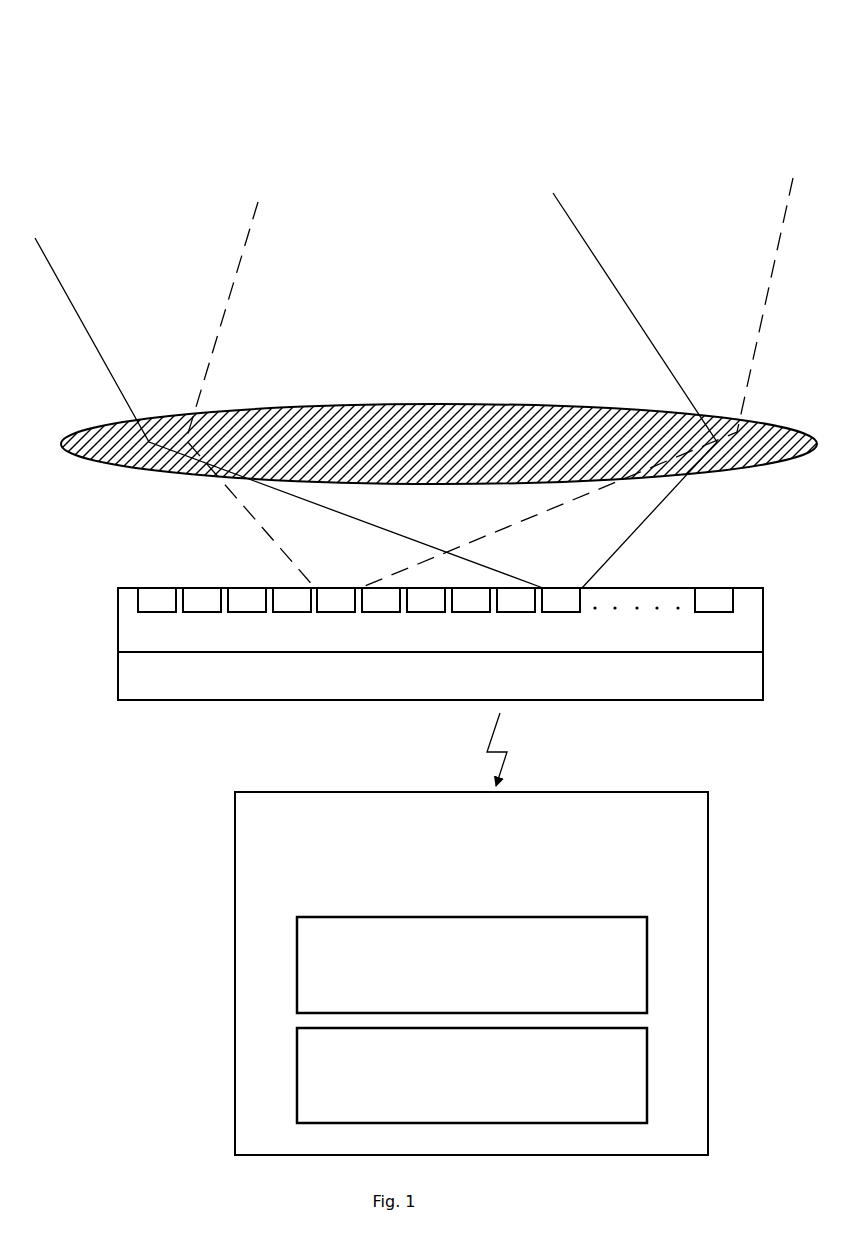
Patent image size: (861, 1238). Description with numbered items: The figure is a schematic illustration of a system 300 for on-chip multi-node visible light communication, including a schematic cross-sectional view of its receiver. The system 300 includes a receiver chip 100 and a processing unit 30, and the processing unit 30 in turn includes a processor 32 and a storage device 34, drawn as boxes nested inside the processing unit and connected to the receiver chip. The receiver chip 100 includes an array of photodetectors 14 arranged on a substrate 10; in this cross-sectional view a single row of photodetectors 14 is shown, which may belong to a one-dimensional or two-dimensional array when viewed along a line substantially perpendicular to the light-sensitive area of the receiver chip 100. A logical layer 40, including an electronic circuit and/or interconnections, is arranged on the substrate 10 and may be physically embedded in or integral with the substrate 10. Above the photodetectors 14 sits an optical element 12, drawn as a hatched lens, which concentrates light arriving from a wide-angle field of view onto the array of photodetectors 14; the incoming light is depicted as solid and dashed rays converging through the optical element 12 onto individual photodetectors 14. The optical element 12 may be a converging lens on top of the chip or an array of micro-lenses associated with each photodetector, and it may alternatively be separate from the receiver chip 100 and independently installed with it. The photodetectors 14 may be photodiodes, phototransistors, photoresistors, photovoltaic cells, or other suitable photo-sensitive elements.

The system 300 is at (726, 78).
The receiver chip 100 is at (647, 165).
The optical element 12 is at (418, 415).
The substrate 10 is at (120, 633).
The photodetectors 14 is at (298, 612).
The logical layer 40 is at (440, 676).
The processing unit 30 is at (471, 973).
The processor 32 is at (472, 965).
The storage device 34 is at (472, 1075).